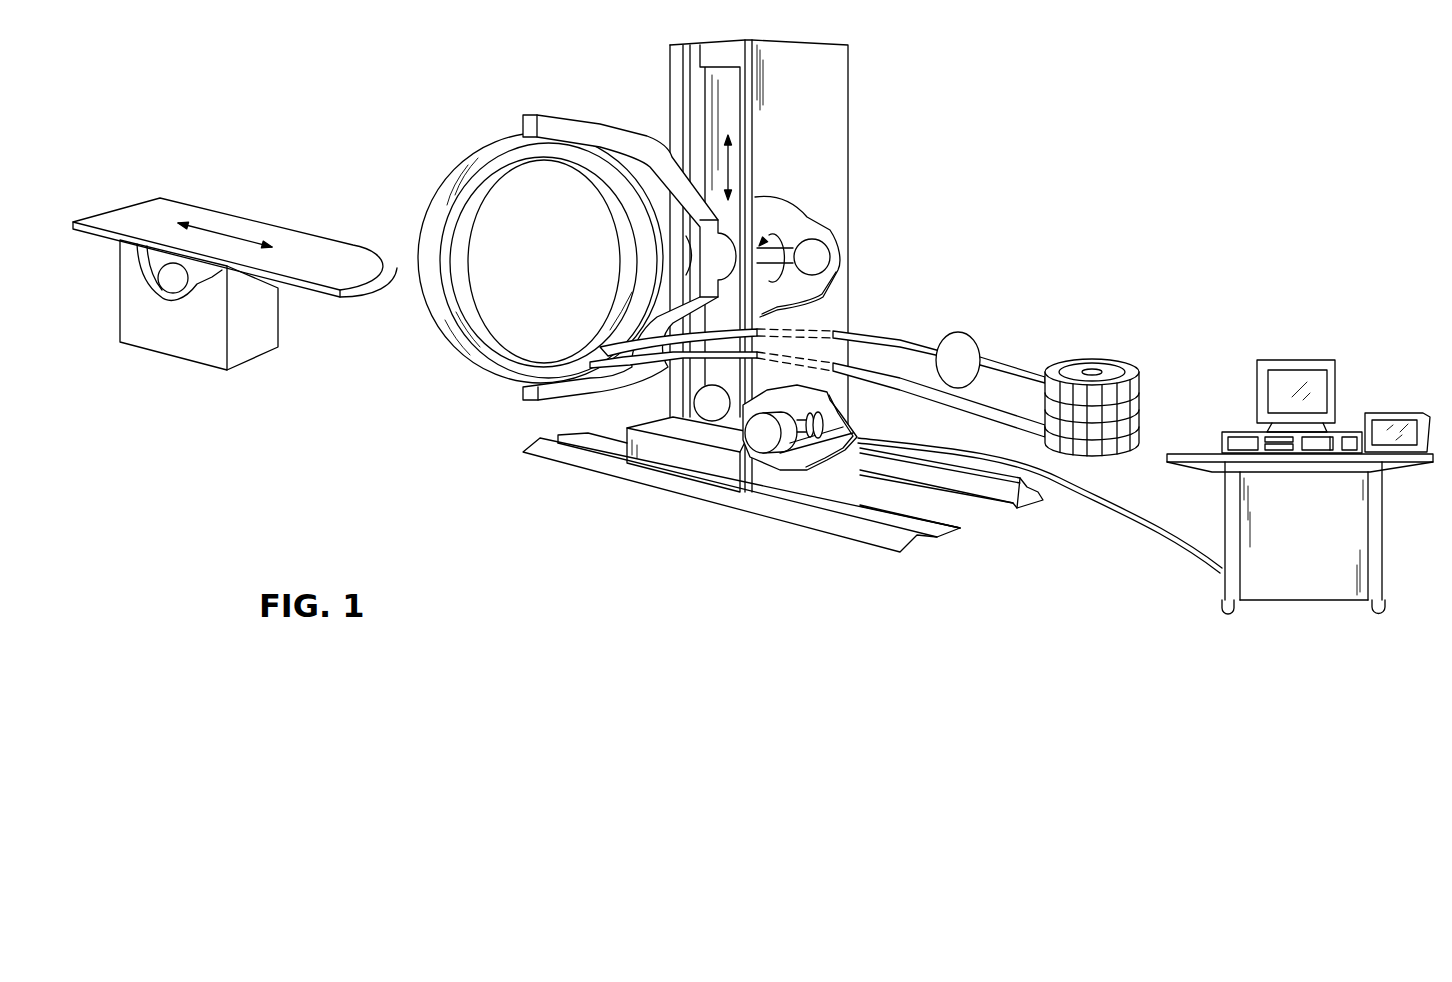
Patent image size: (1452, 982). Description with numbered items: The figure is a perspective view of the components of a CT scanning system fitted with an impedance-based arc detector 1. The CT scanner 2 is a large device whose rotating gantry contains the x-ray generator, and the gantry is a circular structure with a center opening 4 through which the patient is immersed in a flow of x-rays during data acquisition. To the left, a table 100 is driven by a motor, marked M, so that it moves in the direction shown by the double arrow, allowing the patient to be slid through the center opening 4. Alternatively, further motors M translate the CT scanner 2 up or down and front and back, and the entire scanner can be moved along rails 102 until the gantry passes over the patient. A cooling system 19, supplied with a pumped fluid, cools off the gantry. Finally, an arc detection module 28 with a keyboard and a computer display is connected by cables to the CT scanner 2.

The impedance-based arc detector 1 is at (1131, 127).
The CT scanner 2 is at (830, 148).
The center opening 4 is at (555, 268).
The cooling system 19 is at (1077, 358).
The arc detection module 28 is at (1365, 372).
The table 100 is at (323, 278).
The rails 102 is at (853, 517).